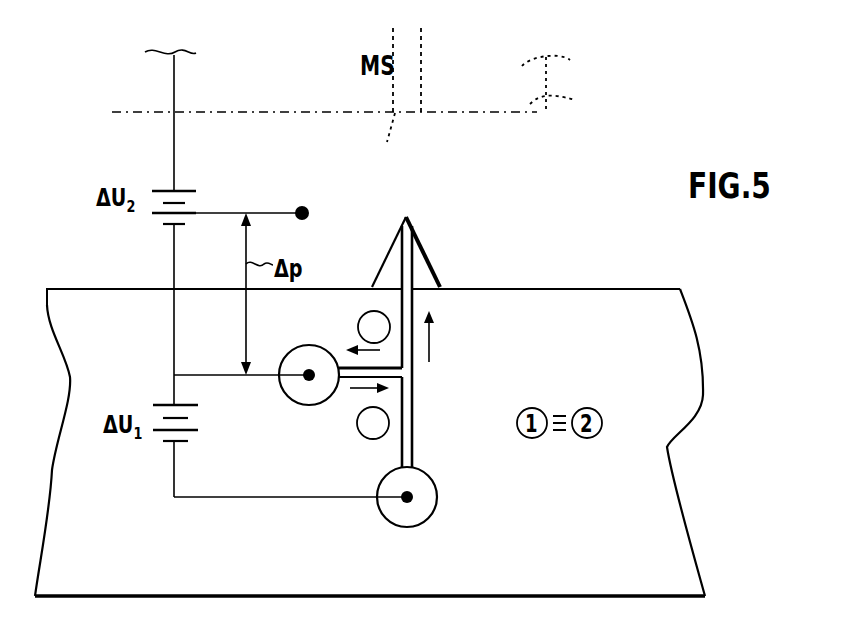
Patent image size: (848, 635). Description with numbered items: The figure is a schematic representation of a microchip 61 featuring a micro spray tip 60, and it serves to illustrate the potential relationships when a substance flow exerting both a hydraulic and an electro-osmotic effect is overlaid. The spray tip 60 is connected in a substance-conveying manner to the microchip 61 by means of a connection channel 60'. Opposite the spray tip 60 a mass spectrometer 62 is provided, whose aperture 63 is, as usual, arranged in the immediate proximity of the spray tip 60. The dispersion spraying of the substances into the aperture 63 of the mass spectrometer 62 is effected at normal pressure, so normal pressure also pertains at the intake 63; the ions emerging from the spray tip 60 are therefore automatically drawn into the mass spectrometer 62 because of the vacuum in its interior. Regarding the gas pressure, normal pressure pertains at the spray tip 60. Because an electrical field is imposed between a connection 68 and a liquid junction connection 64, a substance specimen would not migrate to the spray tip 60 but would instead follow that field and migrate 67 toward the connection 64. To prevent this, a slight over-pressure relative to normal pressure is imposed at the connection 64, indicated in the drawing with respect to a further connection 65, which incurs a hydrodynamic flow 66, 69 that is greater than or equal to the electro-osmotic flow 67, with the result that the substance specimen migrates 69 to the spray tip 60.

The micro spray tip 60 is at (429, 234).
The connection channel 60' is at (426, 346).
The microchip 61 is at (648, 428).
The mass spectrometer (MS) 62 is at (575, 100).
The aperture 63 is at (398, 102).
The liquid junction connection 64 is at (305, 379).
The counter electrode 65 is at (302, 213).
The hydrodynamic flow 66 is at (357, 428).
The electro-osmotic flow 67 is at (358, 327).
The connection 68 is at (407, 497).
The hydrodynamic flow toward spray tip 69 is at (429, 362).